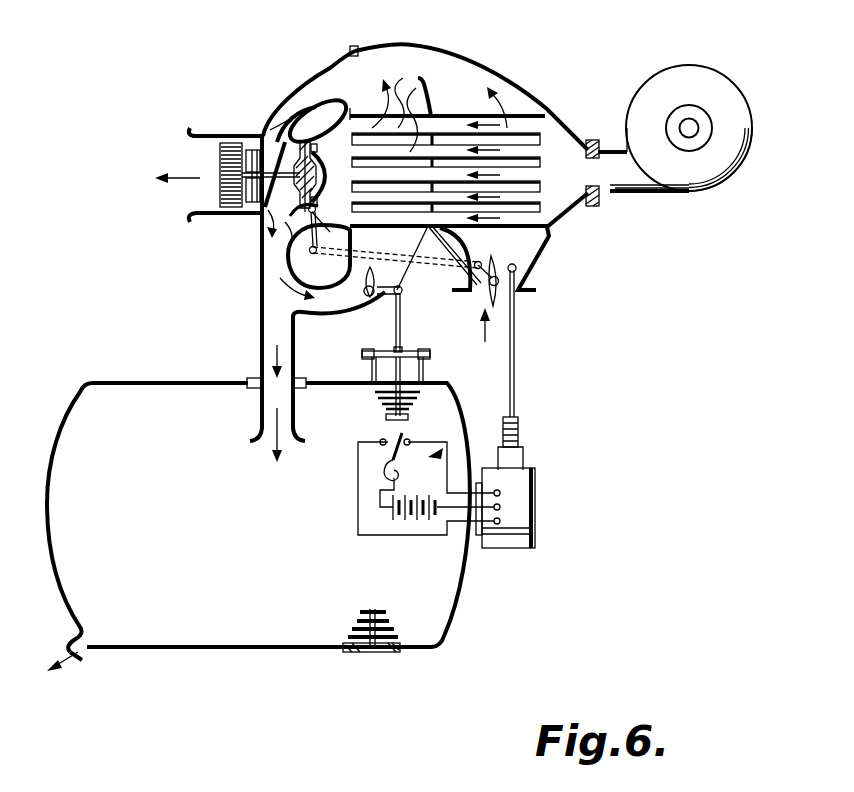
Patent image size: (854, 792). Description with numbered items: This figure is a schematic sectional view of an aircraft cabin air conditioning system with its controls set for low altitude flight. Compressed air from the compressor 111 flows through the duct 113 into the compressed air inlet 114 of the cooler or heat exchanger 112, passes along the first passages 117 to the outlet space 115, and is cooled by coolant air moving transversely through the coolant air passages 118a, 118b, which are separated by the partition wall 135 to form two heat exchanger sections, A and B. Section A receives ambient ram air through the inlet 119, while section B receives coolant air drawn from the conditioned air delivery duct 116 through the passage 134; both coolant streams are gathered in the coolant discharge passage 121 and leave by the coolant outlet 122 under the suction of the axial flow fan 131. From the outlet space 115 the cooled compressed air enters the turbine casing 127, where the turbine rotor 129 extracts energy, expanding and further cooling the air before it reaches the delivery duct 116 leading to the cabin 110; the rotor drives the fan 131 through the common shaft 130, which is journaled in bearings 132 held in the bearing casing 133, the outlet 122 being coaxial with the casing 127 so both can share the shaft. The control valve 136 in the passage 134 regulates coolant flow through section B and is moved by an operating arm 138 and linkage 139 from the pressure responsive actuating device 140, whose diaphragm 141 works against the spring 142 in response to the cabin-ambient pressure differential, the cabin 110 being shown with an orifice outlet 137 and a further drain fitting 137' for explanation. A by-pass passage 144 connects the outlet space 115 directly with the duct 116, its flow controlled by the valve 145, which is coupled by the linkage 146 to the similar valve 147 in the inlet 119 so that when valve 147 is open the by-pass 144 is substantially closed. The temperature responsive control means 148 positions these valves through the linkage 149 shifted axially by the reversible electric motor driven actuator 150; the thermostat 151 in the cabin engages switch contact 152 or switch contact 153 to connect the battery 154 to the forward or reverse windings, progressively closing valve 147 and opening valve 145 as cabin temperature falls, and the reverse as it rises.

The cabin 110 is at (75, 440).
The compressor 111 is at (706, 78).
The cooler or heat exchanger 112 is at (513, 92).
The duct 113 is at (658, 193).
The compressed air inlet 114 is at (568, 131).
The outlet space 115 is at (354, 150).
The conditioned air delivery duct 116 is at (272, 362).
The first passages 117 is at (406, 114).
The coolant air passage 118a is at (558, 214).
The coolant air passage 118b is at (373, 127).
The inlet 119 is at (480, 296).
The coolant discharge passage 121 is at (300, 112).
The coolant outlet 122 is at (200, 190).
The turbine casing 127 is at (287, 120).
The turbine rotor 129 is at (300, 157).
The shaft 130 is at (270, 212).
The axial flow fan 131 is at (220, 154).
The bearings 132 is at (265, 140).
The bearing casing 133 is at (262, 200).
The passage 134 is at (302, 318).
The partition wall 135 is at (432, 86).
The control valve 136 is at (364, 272).
The orifice outlet 137 is at (84, 665).
The drain valve 137' is at (387, 646).
The operating arm 138 is at (399, 290).
The linkage 139 is at (401, 321).
The pressure responsive actuating device 140 is at (405, 376).
The diaphragm 141 is at (404, 352).
The spring 142 is at (383, 401).
The by-pass passage 144 is at (283, 247).
The valve 145 is at (330, 226).
The linkage 146 is at (434, 249).
The valve 147 is at (493, 264).
The temperature responsive control means 148 is at (436, 454).
The linkage 149 is at (515, 368).
The reversible electric motor driven actuator 150 is at (524, 494).
The thermostat 151 is at (388, 464).
The switch contact 152 is at (383, 438).
The switch contact 153 is at (407, 438).
The battery 154 is at (412, 520).